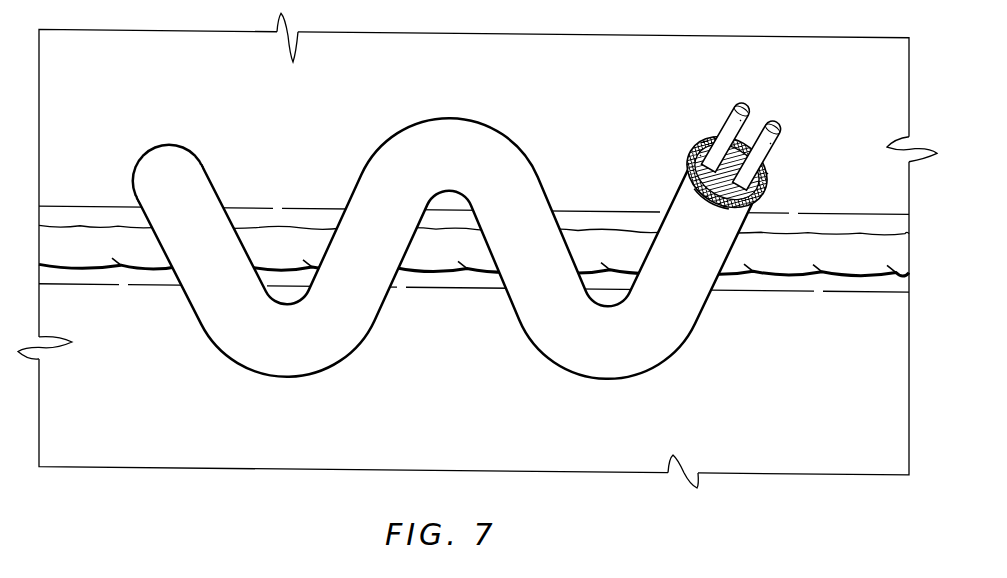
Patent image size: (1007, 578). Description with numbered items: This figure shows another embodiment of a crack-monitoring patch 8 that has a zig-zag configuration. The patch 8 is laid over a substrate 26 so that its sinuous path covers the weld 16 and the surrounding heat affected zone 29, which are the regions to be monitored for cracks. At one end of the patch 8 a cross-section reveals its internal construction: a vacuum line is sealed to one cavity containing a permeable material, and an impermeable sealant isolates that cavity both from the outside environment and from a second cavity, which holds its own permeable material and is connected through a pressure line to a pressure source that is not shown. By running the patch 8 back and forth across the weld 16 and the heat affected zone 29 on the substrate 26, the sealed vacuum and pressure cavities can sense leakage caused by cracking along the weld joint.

The patch 8 is at (547, 357).
The weld 16 is at (828, 256).
The substrate 26 is at (521, 447).
The heat affected zone 29 is at (477, 284).